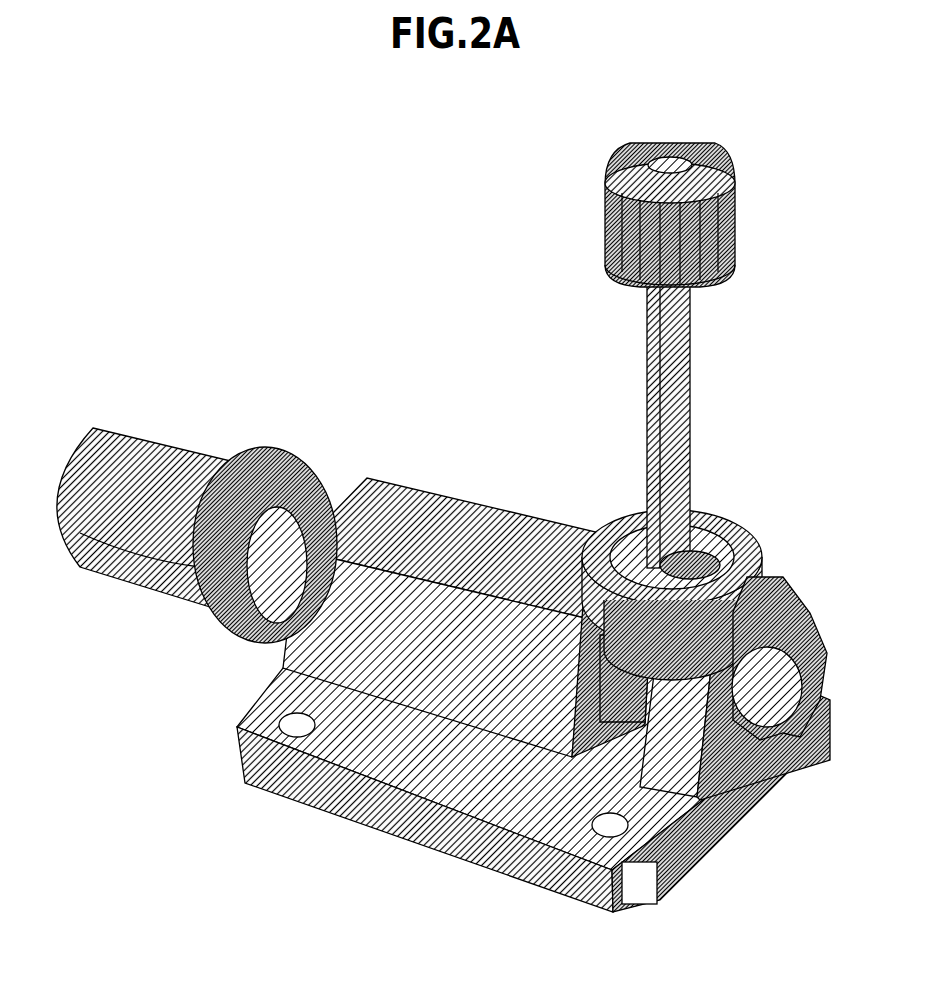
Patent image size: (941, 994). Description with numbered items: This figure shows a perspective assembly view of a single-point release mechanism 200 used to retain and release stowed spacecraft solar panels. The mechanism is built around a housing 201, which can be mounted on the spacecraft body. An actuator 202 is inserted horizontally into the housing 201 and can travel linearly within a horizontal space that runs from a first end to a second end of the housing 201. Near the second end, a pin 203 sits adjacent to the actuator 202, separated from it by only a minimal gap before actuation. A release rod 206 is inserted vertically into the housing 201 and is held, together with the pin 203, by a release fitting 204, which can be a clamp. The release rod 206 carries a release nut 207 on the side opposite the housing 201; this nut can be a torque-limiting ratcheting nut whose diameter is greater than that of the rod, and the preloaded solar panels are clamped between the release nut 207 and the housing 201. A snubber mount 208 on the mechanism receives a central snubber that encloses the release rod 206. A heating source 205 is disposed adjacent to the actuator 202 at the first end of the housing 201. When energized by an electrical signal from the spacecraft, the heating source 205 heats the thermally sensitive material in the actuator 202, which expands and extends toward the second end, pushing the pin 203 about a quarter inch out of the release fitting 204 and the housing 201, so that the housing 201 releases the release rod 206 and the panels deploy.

The single-point release mechanism 200 is at (543, 763).
The housing 201 is at (542, 553).
The actuator 202 is at (283, 558).
The pin 203 is at (832, 665).
The release fitting 204 is at (695, 580).
The heating source 205 is at (115, 473).
The release rod 206 is at (675, 377).
The release nut 207 is at (592, 213).
The snubber mount 208 is at (607, 557).